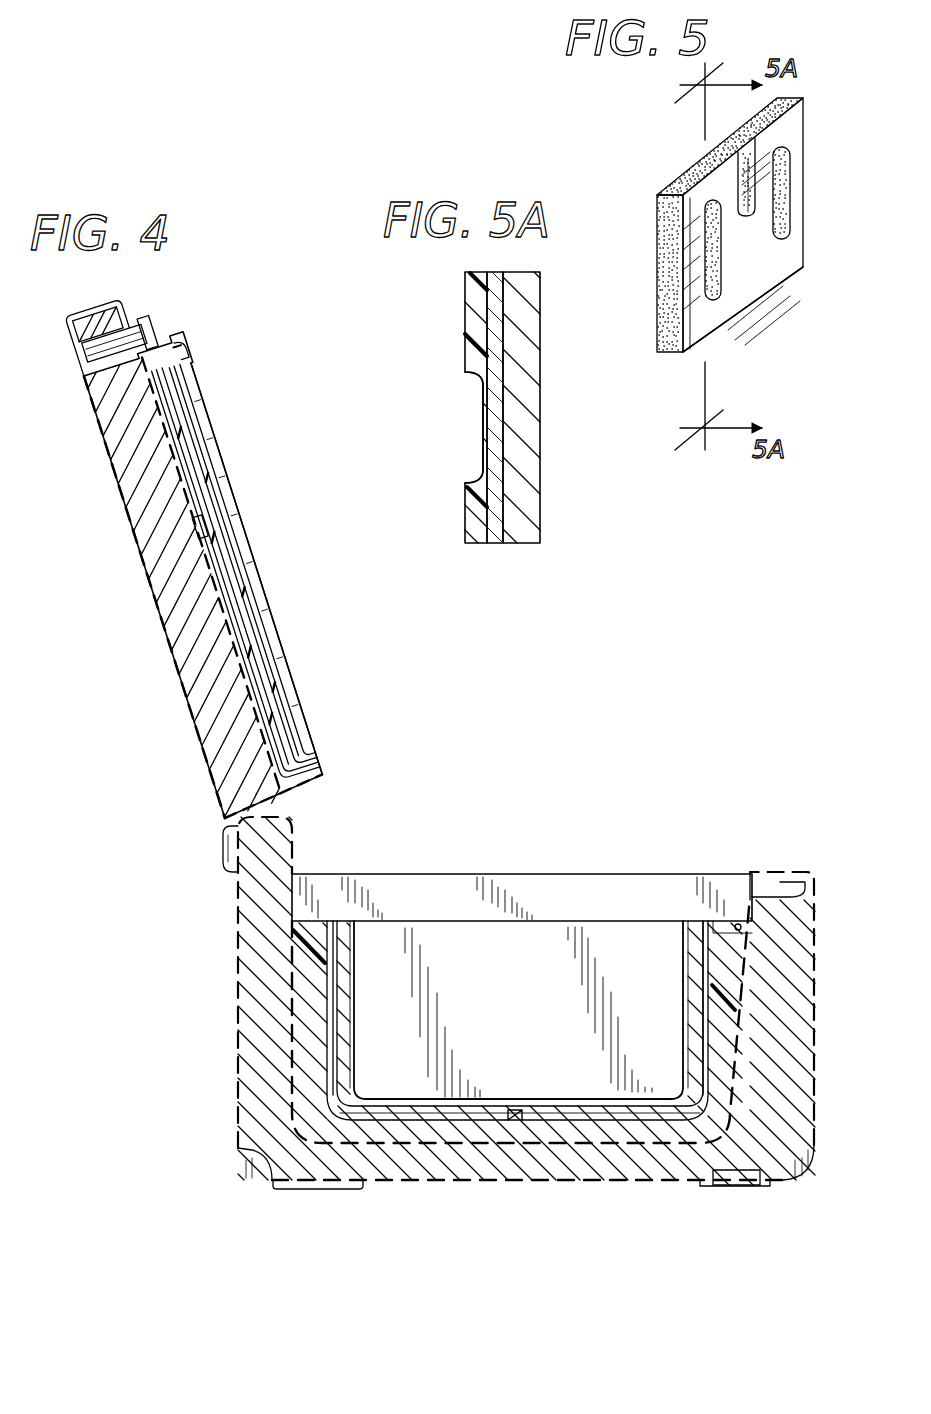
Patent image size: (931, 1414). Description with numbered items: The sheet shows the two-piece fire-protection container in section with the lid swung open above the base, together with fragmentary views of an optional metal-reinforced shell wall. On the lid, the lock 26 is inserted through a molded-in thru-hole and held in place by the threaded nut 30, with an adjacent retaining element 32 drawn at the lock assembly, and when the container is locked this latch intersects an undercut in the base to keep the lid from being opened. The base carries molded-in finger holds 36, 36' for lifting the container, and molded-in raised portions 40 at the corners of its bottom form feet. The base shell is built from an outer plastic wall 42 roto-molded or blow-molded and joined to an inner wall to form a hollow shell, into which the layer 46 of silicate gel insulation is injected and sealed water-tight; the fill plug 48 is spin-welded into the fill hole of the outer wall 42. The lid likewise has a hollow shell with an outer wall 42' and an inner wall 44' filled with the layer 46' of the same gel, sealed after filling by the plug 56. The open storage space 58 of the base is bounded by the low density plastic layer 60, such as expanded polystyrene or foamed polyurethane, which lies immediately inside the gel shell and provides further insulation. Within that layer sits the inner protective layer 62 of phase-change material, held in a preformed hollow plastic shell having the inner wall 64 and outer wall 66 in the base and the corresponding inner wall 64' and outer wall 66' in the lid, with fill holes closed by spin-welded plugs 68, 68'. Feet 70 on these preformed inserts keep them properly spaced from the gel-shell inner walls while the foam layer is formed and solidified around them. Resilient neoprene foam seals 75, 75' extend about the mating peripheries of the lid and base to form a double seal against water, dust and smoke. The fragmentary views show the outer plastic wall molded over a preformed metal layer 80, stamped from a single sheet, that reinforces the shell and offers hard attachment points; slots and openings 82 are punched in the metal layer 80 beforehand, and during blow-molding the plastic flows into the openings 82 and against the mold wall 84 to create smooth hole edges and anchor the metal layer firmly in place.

In FIG. 4, the lock 26 is at (74, 360).
In FIG. 4, the threaded nut 30 is at (133, 327).
In FIG. 4, the retaining clip 32 is at (157, 350).
In FIG. 4, the finger hold 36 is at (206, 1153).
In FIG. 4, the finger hold 36' is at (811, 1190).
In FIG. 4, the raised portions 40 is at (306, 1189).
In FIG. 4, the outer plastic wall 42 is at (486, 998).
In FIG. 5, the outer plastic wall 42 is at (704, 225).
In FIG. 5A, the outer plastic wall 42 is at (441, 407).
In FIG. 4, the outer wall of lid 42' is at (188, 588).
In FIG. 4, the inner wall of lid 44' is at (203, 575).
In FIG. 4, the layer of silicate gel insulation 46 is at (486, 1001).
In FIG. 4, the layer of ceramic gel insulation 46' is at (179, 588).
In FIG. 4, the fill plug 48 is at (722, 1182).
In FIG. 4, the plug 56 is at (197, 555).
In FIG. 4, the interior compartment 58 is at (510, 942).
In FIG. 4, the low density plastic layer 60 is at (346, 984).
In FIG. 4, the inner protective layer 62 is at (345, 1076).
In FIG. 4, the inner wall 64 is at (522, 887).
In FIG. 4, the inner wall 64' is at (270, 569).
In FIG. 4, the outer wall 66 is at (520, 1075).
In FIG. 4, the outer wall 66' is at (269, 564).
In FIG. 4, the spin-welded plug 68 is at (505, 1171).
In FIG. 4, the spin-welded plug 68' is at (242, 569).
In FIG. 4, the feet 70 is at (398, 1128).
In FIG. 4, the foam seal 75 is at (769, 869).
In FIG. 4, the foam seal 75' is at (228, 360).
In FIG. 5, the metal layer 80 is at (738, 290).
In FIG. 5A, the metal layer 80 is at (478, 546).
In FIG. 5, the openings 82 is at (747, 205).
In FIG. 5A, the mold wall 84 is at (525, 479).